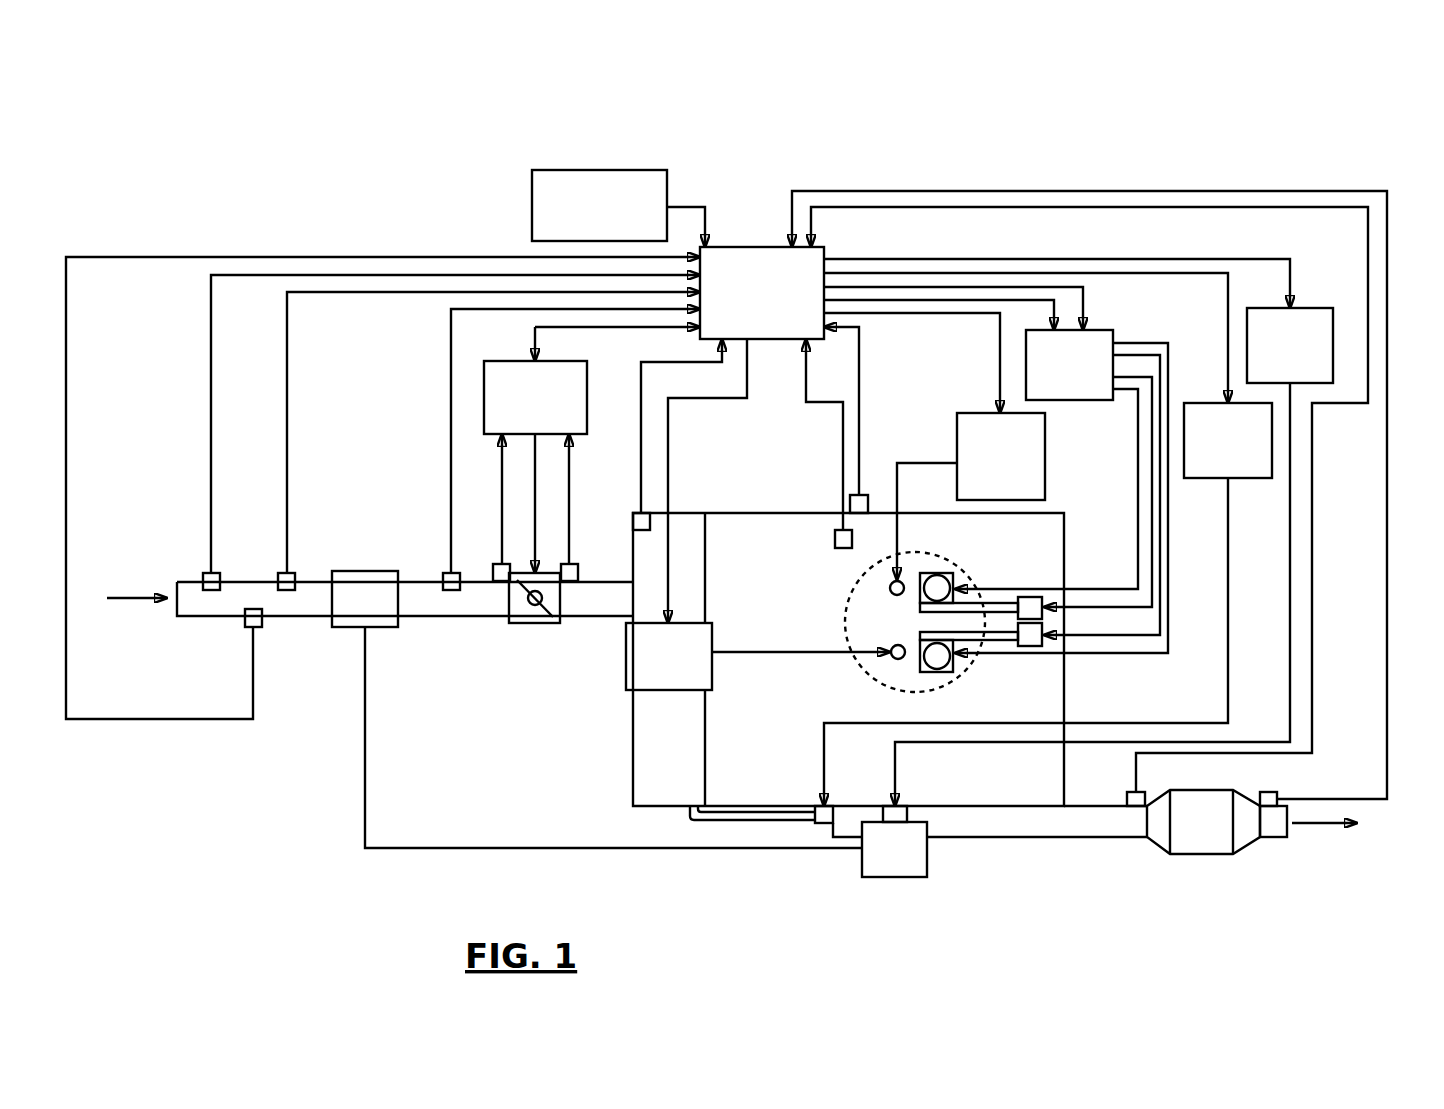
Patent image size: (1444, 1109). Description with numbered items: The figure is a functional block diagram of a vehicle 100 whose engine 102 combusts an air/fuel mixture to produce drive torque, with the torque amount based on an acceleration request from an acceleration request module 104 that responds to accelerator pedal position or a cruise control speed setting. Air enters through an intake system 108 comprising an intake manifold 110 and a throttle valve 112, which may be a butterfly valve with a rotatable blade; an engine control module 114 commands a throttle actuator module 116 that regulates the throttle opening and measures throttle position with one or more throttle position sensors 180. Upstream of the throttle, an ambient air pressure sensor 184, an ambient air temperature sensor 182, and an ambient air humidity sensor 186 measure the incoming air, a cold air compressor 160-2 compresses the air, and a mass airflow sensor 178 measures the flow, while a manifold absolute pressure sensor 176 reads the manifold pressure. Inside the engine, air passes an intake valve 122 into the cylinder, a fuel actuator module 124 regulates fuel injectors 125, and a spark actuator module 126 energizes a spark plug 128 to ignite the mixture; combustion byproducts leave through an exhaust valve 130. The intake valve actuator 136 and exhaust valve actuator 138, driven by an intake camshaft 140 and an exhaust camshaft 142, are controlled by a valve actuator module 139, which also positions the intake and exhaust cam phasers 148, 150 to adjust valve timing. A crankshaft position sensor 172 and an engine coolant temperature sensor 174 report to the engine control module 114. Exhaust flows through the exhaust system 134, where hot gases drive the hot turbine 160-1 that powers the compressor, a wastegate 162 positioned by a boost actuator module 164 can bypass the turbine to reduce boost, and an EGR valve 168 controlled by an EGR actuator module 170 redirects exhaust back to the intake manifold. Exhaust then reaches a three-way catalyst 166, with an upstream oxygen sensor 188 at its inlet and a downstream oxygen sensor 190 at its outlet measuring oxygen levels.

The vehicle 100 is at (1376, 128).
The engine 102 is at (1065, 528).
The acceleration request module 104 is at (532, 180).
The intake system 108 is at (497, 740).
The intake manifold 110 is at (633, 743).
The throttle valve 112 is at (537, 624).
The engine control module 114 is at (824, 250).
The throttle actuator module 116 is at (500, 361).
The intake valve 122 is at (935, 568).
The fuel actuator module 124 is at (680, 691).
The fuel injector 125 is at (887, 654).
The spark actuator module 126 is at (1045, 462).
The spark plug 128 is at (889, 589).
The exhaust valve 130 is at (937, 685).
The exhaust system 134 is at (1288, 928).
The intake valve actuator 136 is at (954, 582).
The exhaust valve actuator 138 is at (955, 668).
The valve actuator module 139 is at (1100, 330).
The intake camshaft 140 is at (985, 604).
The exhaust camshaft 142 is at (985, 641).
The intake cam phaser 148 is at (1037, 597).
The exhaust cam phaser 150 is at (1037, 647).
The hot turbine 160-1 is at (927, 858).
The cold air compressor 160-2 is at (365, 571).
The wastegate 162 is at (910, 808).
The boost actuator module 164 is at (1310, 308).
The three-way catalyst 166 is at (1203, 790).
The EGR valve 168 is at (824, 824).
The EGR actuator module 170 is at (1208, 403).
The crankshaft position sensor 172 is at (862, 495).
The engine coolant temperature sensor 174 is at (840, 548).
The manifold absolute pressure sensor 176 is at (633, 515).
The mass airflow sensor 178 is at (447, 573).
The throttle position sensor 180 is at (500, 583).
The ambient air temperature sensor 182 is at (279, 574).
The ambient air pressure sensor 184 is at (204, 574).
The ambient air humidity sensor 186 is at (248, 627).
The upstream oxygen sensor 188 is at (1128, 792).
The downstream oxygen sensor 190 is at (1275, 792).